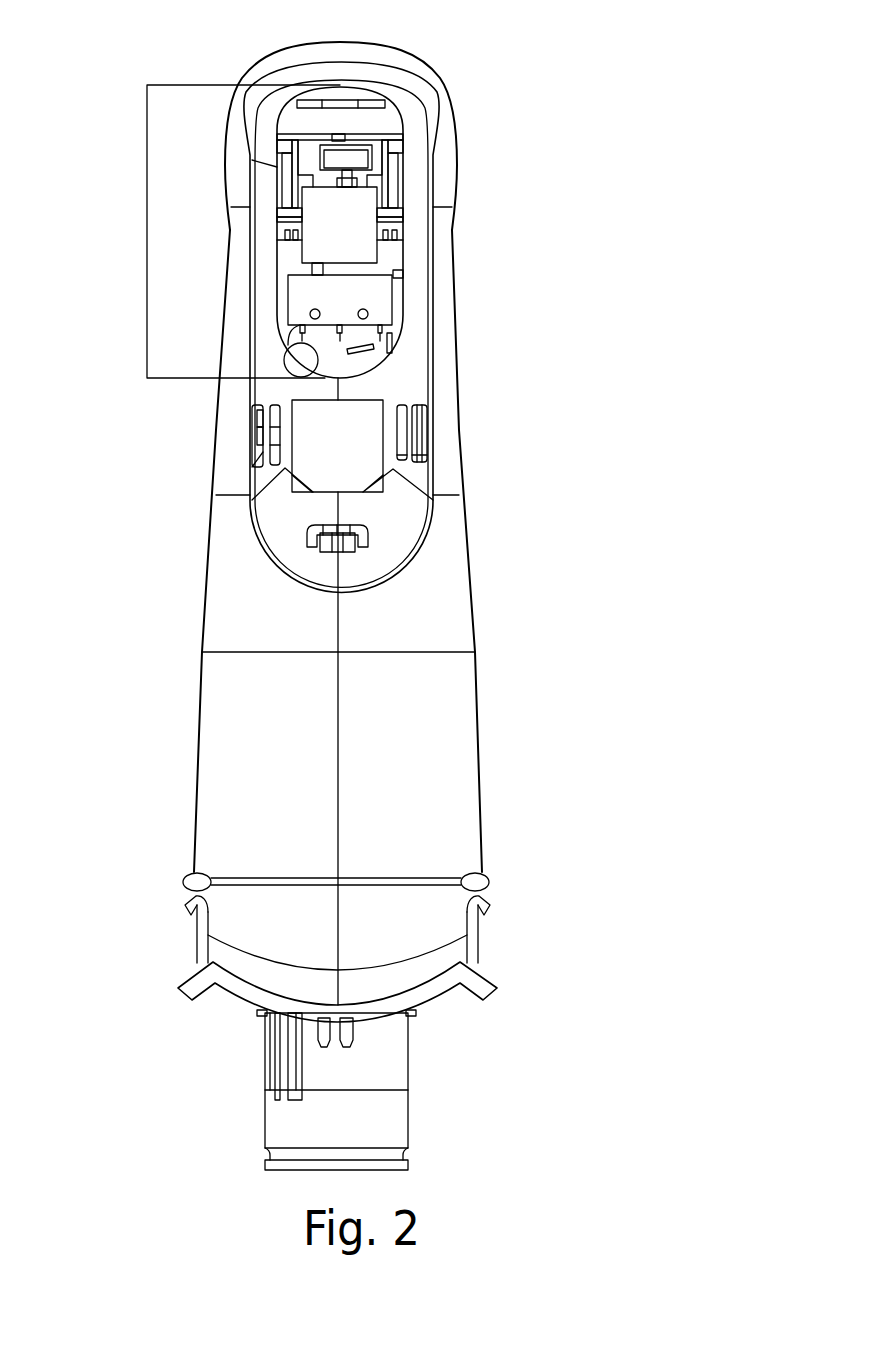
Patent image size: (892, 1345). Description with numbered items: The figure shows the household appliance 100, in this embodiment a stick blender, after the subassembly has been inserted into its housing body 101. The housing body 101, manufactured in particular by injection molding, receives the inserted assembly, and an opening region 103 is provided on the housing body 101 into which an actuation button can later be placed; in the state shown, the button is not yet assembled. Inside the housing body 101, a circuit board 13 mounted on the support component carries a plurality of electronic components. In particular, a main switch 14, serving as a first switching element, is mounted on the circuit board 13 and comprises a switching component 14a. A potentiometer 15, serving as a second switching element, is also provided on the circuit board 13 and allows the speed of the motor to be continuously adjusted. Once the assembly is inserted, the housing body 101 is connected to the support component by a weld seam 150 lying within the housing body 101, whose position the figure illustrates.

The household appliance 100 is at (600, 93).
The housing body 101 is at (223, 711).
The opening region 103 is at (147, 173).
The circuit board 13 is at (357, 352).
The main switch 14 is at (367, 302).
The switching component 14a is at (313, 278).
The potentiometer 15 is at (368, 160).
The weld seam 150 is at (250, 878).